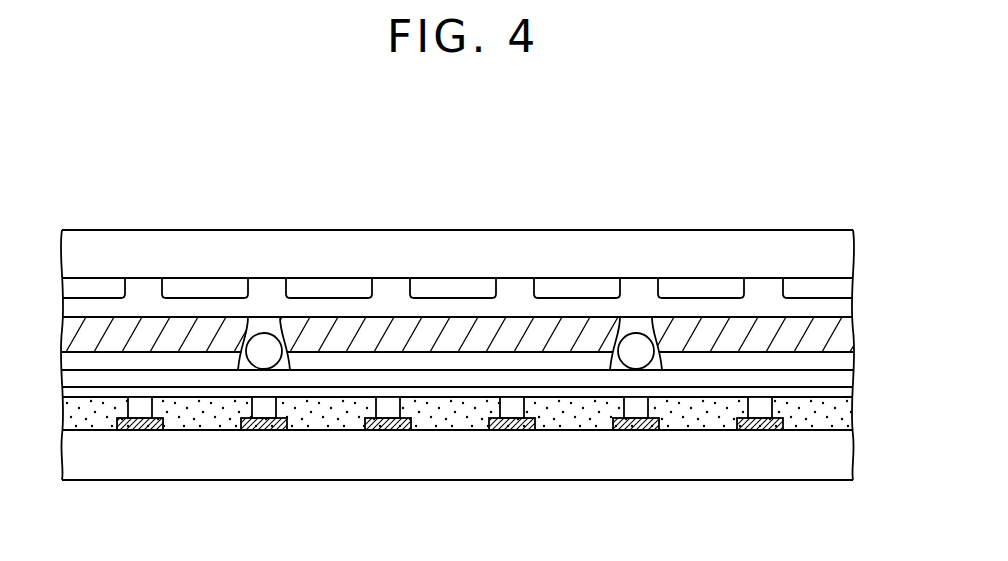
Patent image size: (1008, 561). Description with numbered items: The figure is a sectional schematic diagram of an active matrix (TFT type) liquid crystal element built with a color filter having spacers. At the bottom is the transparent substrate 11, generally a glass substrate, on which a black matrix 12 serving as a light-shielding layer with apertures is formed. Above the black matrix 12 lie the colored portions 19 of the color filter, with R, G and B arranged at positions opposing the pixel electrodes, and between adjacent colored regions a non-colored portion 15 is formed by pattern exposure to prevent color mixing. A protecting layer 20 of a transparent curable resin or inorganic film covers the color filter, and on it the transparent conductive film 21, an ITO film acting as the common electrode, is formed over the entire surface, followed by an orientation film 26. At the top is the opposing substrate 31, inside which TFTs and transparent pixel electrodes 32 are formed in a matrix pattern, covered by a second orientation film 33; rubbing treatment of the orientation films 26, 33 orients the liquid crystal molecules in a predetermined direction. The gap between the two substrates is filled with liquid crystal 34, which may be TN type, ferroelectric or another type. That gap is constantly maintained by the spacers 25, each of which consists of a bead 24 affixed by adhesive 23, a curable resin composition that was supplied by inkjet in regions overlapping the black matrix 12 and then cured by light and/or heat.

The transparent substrate 11 is at (658, 463).
The black matrix 12 is at (520, 422).
The non-colored portion 15 is at (382, 410).
The colored portions 19 is at (433, 422).
The protecting layer 20 is at (842, 395).
The transparent conductive film 21 is at (842, 380).
The adhesive 23 is at (298, 344).
The beads 24 is at (264, 343).
The spacers 25 is at (263, 175).
The orientation film 26 is at (842, 362).
The opposing substrate 31 is at (440, 248).
The transparent pixel electrodes 32 is at (555, 290).
The orientation film 33 is at (838, 308).
The liquid crystal 34 is at (838, 332).